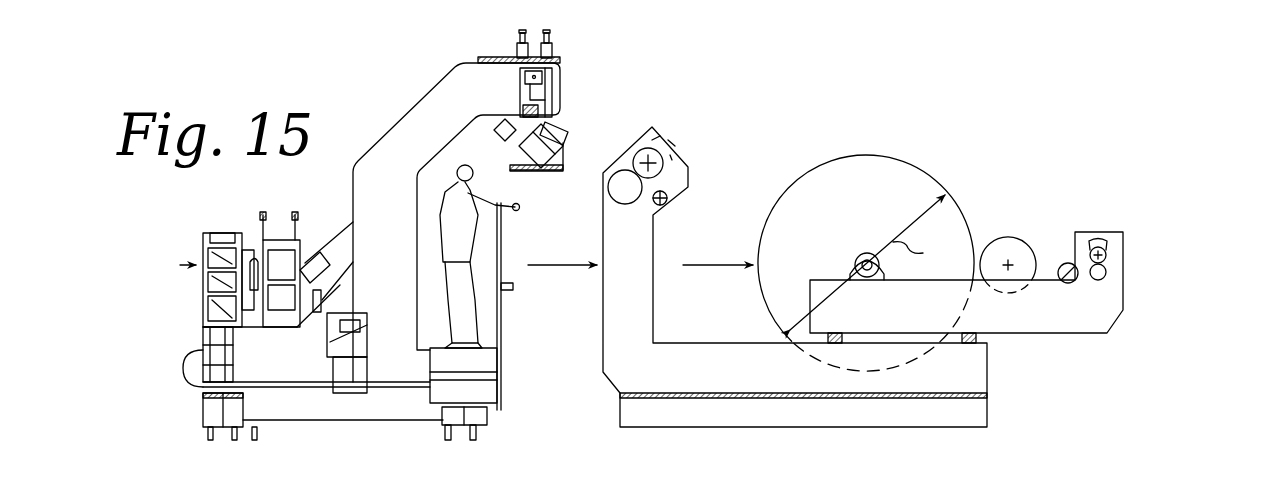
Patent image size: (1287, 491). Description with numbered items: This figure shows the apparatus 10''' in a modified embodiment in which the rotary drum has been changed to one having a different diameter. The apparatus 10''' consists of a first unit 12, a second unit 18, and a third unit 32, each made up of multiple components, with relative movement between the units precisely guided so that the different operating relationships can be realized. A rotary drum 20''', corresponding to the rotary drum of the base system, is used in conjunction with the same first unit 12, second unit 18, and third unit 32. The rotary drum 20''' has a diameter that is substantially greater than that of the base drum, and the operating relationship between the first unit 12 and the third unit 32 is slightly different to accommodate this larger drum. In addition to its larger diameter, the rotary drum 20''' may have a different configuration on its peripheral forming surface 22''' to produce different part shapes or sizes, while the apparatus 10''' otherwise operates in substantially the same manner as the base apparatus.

The apparatus 10''' is at (489, 143).
The first unit 12 is at (400, 141).
The second unit 18 is at (640, 372).
The rotary drum 20''' is at (871, 223).
The peripheral forming surface 22''' is at (966, 234).
The third unit 32 is at (1083, 312).